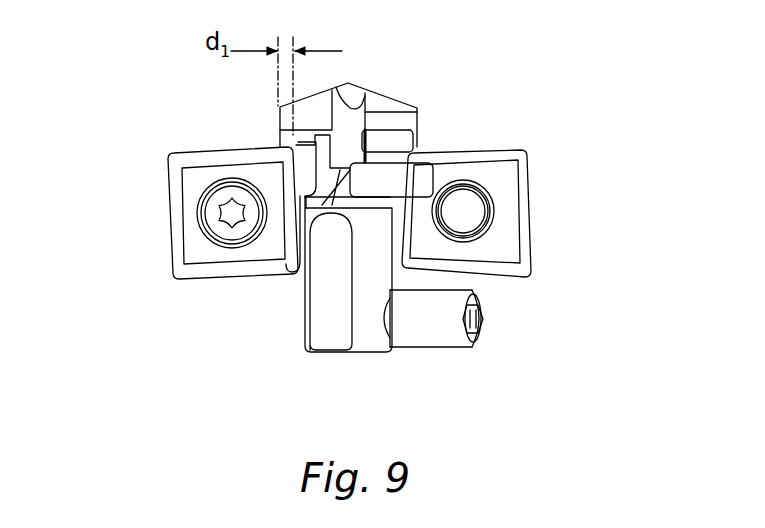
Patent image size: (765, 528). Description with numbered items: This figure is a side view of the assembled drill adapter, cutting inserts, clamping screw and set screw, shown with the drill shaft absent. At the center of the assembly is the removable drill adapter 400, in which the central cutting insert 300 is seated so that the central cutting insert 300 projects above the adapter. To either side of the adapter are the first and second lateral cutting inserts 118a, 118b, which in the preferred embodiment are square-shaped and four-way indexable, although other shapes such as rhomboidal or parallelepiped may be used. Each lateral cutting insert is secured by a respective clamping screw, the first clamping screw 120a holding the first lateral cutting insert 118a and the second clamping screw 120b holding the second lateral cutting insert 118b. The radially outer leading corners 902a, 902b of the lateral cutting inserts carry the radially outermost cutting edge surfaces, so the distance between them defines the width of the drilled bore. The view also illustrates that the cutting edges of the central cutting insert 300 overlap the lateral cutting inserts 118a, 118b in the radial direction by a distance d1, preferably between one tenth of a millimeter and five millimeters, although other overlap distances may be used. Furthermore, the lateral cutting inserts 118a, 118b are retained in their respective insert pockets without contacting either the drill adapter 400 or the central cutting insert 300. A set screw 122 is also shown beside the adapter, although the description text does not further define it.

The central cutting insert 300 is at (381, 100).
The removable drill adapter 400 is at (298, 330).
The adjustment screw 122 is at (487, 316).
The radially outer leading corner 902a is at (165, 156).
The radially outer leading corner 902b is at (530, 152).
The first lateral cutting insert 118a is at (175, 266).
The second lateral cutting insert 118b is at (484, 170).
The first clamping screw 120a is at (235, 213).
The second clamping screw 120b is at (468, 210).